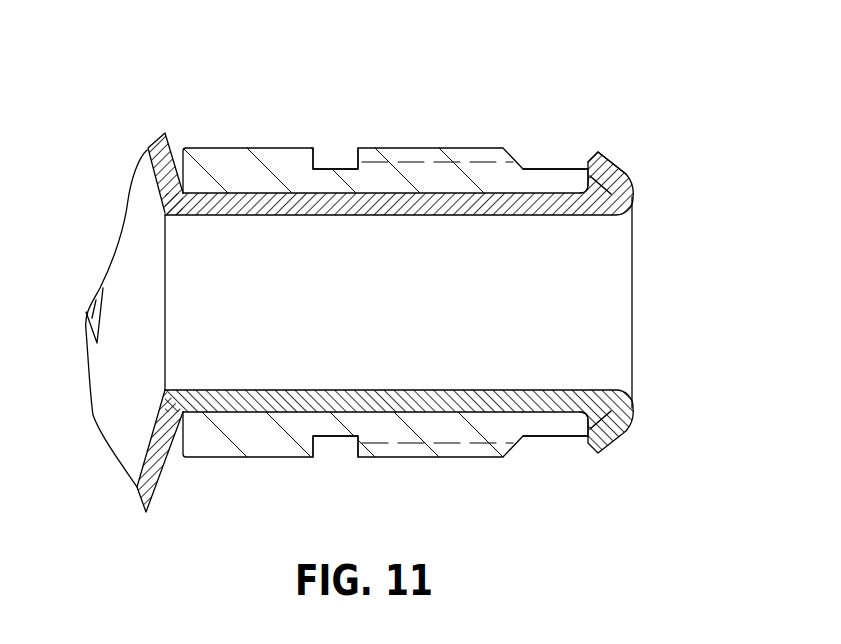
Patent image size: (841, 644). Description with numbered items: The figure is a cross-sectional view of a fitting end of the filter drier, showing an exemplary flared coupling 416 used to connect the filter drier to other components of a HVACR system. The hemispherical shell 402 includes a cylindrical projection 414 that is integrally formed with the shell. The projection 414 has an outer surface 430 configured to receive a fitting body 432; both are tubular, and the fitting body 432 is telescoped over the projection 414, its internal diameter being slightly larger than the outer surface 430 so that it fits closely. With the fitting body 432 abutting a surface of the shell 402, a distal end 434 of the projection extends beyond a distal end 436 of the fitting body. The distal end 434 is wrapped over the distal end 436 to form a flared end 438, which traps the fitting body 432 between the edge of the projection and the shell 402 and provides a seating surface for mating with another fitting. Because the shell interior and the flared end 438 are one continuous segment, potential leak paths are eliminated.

The hemispherical shell 402 is at (160, 142).
The cylindrical projection 414 is at (373, 215).
The flared coupling 416 is at (528, 100).
The outer surface 430 is at (318, 192).
The fitting body 432 is at (218, 172).
The distal end of the projection 434 is at (610, 175).
The distal end of the fitting body 436 is at (578, 183).
The flared end 438 is at (643, 188).